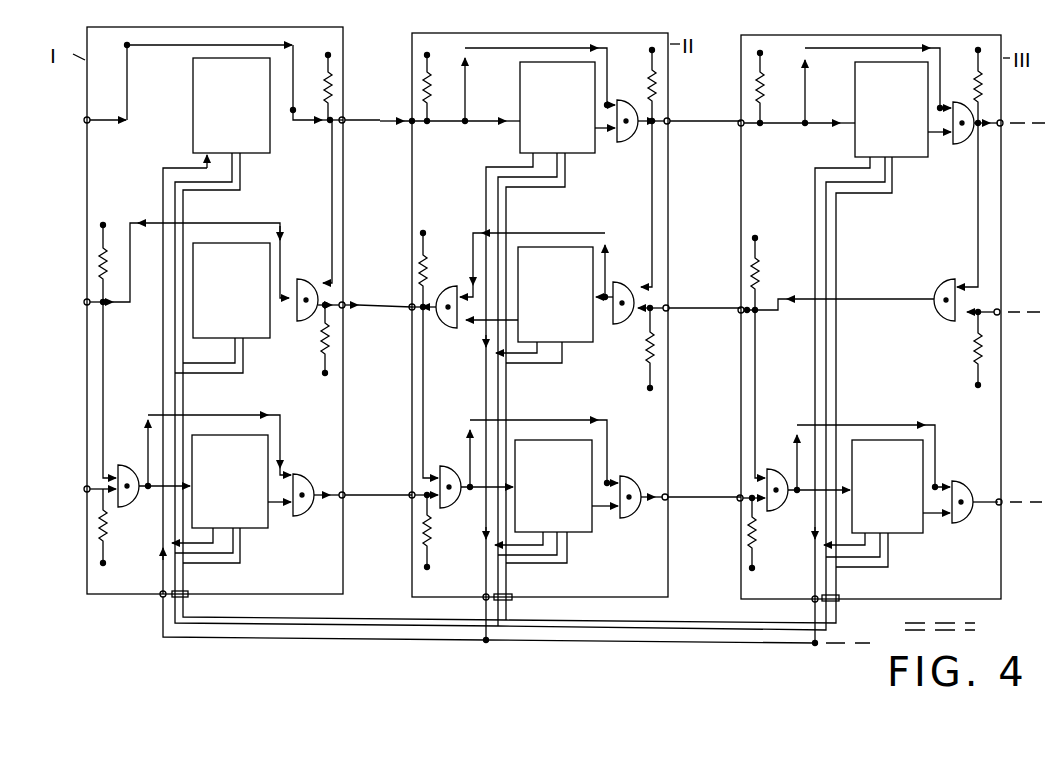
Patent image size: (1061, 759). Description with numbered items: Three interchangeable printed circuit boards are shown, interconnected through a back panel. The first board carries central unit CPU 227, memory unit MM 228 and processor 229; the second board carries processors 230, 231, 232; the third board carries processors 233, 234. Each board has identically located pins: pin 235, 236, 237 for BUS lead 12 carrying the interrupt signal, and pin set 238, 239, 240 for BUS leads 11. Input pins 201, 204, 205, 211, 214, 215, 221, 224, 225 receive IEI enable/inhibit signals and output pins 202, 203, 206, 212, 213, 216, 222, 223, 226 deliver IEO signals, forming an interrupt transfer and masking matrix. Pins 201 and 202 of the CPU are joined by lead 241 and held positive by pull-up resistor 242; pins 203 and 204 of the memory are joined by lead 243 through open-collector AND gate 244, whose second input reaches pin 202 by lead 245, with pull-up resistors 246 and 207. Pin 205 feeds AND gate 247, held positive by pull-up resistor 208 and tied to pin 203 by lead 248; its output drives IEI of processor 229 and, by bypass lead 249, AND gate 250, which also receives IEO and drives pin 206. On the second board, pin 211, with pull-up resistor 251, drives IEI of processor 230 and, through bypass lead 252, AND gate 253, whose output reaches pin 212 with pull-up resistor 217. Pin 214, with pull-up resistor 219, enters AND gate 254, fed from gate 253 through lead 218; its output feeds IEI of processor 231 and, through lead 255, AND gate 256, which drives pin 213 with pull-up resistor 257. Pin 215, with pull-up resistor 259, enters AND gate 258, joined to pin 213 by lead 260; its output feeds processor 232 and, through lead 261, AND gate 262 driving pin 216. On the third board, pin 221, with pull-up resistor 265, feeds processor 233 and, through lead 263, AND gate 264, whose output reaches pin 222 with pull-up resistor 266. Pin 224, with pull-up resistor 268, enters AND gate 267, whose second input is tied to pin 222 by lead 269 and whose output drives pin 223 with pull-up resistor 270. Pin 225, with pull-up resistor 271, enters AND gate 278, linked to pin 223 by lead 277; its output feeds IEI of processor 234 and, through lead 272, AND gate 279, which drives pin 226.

The BUS leads 11 is at (358, 628).
The BUS lead 12 is at (223, 640).
The input pin 201 is at (85, 120).
The output pin 202 is at (345, 125).
The output pin 203 is at (85, 306).
The input pin 204 is at (344, 301).
The input pin 205 is at (85, 488).
The output pin 206 is at (344, 488).
The pull-up resistor 207 is at (335, 350).
The pull-up resistor 208 is at (92, 527).
The input pin 211 is at (406, 118).
The output pin 212 is at (668, 126).
The output pin 213 is at (408, 311).
The input pin 214 is at (667, 304).
The input pin 215 is at (408, 498).
The output pin 216 is at (667, 492).
The pull-up resistor 217 is at (647, 89).
The lead 218 is at (653, 203).
The pull-up resistor 219 is at (647, 362).
The input pin 221 is at (738, 120).
The output pin 222 is at (1001, 127).
The output pin 223 is at (737, 313).
The input pin 224 is at (999, 308).
The input pin 225 is at (737, 501).
The output pin 226 is at (1000, 497).
The central unit CPU 227 is at (270, 153).
The memory unit MM 228 is at (270, 338).
The processor 229 is at (268, 528).
The processor 230 is at (595, 153).
The processor 231 is at (579, 343).
The processor 232 is at (585, 532).
The processor 233 is at (908, 158).
The processor 234 is at (905, 533).
The pin 235 is at (159, 592).
The pin 236 is at (482, 594).
The pin 237 is at (810, 597).
The pin set 238 is at (190, 593).
The pin set 239 is at (513, 595).
The pin set 240 is at (840, 598).
The lead 241 is at (125, 67).
The pull-up resistor 242 is at (338, 80).
The lead 243 is at (240, 222).
The AND gate 244 is at (298, 322).
The lead 245 is at (330, 210).
The pull-up resistor 246 is at (95, 250).
The AND gate 247 is at (126, 508).
The lead 248 is at (104, 392).
The bypass lead 249 is at (242, 414).
The AND gate 250 is at (305, 470).
The pull-up resistor 251 is at (432, 88).
The bypass lead 252 is at (515, 48).
The AND gate 253 is at (628, 143).
The AND gate 254 is at (618, 325).
The lead 255 is at (545, 233).
The AND gate 256 is at (450, 332).
The pull-up resistor 257 is at (428, 269).
The AND gate 258 is at (455, 508).
The pull-up resistor 259 is at (420, 533).
The lead 260 is at (430, 402).
The lead 261 is at (572, 418).
The AND gate 262 is at (634, 470).
The lead 263 is at (835, 48).
The AND gate 264 is at (952, 145).
The pull-up resistor 265 is at (778, 88).
The pull-up resistor 266 is at (976, 85).
The AND gate 267 is at (940, 278).
The pull-up resistor 268 is at (973, 353).
The lead 269 is at (978, 228).
The pull-up resistor 270 is at (763, 258).
The pull-up resistor 271 is at (743, 542).
The lead 272 is at (887, 425).
The connection line 277 is at (758, 375).
The AND gate 278 is at (777, 511).
The AND gate 279 is at (970, 480).